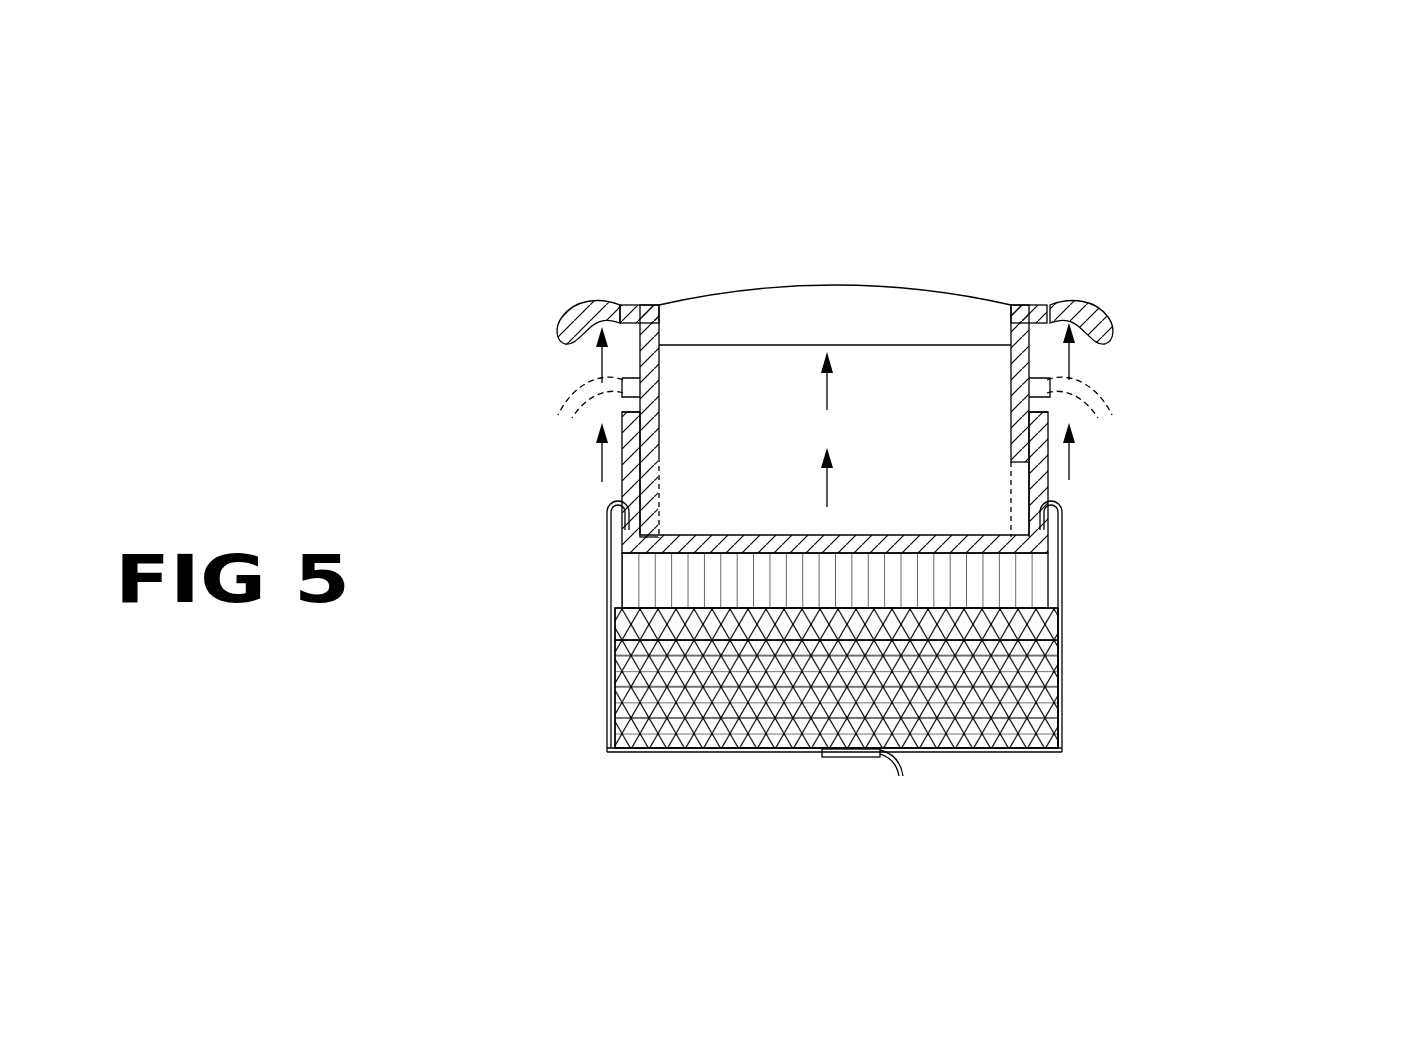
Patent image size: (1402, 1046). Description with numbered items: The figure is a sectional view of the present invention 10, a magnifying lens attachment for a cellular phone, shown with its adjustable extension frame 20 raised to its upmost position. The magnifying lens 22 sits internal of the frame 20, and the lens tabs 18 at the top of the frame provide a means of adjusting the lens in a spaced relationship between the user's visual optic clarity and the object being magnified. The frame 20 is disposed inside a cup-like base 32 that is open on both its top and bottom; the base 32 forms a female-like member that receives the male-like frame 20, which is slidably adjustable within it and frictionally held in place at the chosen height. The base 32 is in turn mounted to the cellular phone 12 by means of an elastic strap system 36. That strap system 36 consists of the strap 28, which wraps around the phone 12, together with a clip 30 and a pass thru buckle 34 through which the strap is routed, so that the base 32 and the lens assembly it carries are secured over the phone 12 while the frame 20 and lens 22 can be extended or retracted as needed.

The present invention 10 is at (899, 309).
The cellular phone 12 is at (1052, 697).
The lens tabs 18 is at (1087, 320).
The adjustable extension frame 20 is at (640, 378).
The lens 22 is at (817, 287).
The strap 28 is at (1062, 580).
The clip 30 is at (1062, 505).
The cup-like base 32 is at (1050, 413).
The pass thru buckle 34 is at (850, 762).
The elastic strap system 36 is at (1050, 507).